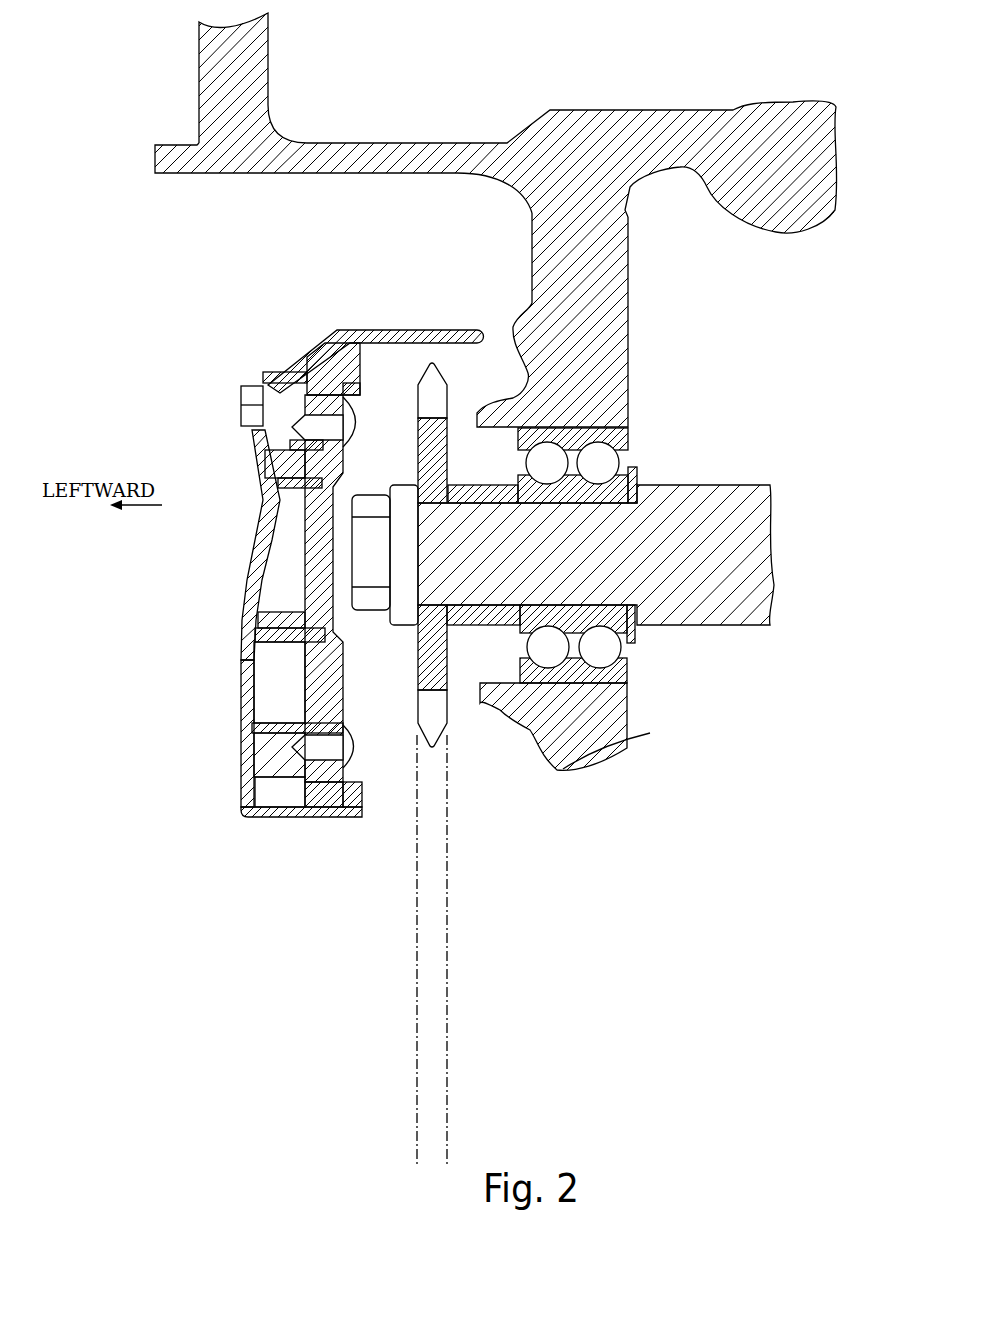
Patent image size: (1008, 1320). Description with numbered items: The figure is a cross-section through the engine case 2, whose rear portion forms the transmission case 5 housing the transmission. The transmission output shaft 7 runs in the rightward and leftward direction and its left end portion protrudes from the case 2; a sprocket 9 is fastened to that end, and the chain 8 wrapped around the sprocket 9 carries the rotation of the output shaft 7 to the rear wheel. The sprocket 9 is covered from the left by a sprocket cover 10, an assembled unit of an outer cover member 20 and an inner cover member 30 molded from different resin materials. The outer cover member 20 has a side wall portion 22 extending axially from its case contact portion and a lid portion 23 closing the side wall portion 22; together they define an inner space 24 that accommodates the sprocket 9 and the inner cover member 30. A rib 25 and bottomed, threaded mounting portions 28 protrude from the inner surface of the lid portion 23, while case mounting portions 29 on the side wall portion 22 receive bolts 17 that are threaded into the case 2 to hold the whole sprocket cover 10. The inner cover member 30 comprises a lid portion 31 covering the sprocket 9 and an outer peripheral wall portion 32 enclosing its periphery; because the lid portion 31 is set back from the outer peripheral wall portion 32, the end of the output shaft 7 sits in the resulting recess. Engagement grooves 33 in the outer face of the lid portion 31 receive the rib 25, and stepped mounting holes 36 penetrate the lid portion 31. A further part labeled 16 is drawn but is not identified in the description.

The case 2 is at (375, 140).
The transmission case 5 is at (530, 228).
The transmission output shaft 7 is at (718, 500).
The chain 8 is at (447, 992).
The sprocket 9 is at (432, 375).
The sprocket cover 10 is at (306, 816).
The rivet 16 is at (320, 432).
The bolts 17 is at (242, 392).
The outer cover member 20 is at (225, 798).
The side wall portion 22 is at (383, 330).
The lid portion 23 is at (235, 565).
The inner space 24 is at (282, 702).
The rib 25 is at (285, 500).
The mounting portions 28 is at (265, 378).
The case mounting portions 29 is at (285, 375).
The inner cover member 30 is at (258, 808).
The lid portion 31 is at (290, 675).
The outer peripheral wall portion 32 is at (333, 805).
The engagement grooves 33 is at (280, 470).
The mounting holes 36 is at (360, 395).